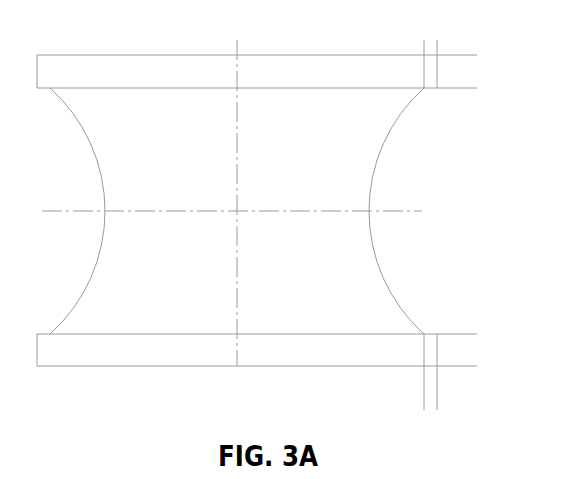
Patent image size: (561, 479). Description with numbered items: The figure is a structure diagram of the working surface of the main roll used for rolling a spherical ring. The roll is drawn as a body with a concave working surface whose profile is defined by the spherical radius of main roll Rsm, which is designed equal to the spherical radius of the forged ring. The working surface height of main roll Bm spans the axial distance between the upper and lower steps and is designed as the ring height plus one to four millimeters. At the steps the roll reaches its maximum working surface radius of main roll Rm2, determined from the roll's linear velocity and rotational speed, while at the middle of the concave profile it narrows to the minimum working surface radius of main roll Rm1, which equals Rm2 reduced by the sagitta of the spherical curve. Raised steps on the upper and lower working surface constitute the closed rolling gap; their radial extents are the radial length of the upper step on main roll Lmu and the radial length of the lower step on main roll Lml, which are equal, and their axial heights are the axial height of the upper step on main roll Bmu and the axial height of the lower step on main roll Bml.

The maximum working surface radius of main roll Rm2 is at (424, 44).
The radial length of the upper step on main roll Lmu is at (477, 44).
The axial height of the upper step on main roll Bmu is at (477, 88).
The spherical radius of main roll Rsm is at (380, 153).
The working surface height of main roll Bm is at (477, 334).
The minimum working surface radius of main roll Rm1 is at (368, 276).
The axial height of the lower step on main roll Bml is at (477, 393).
The radial length of the lower step on main roll Lml is at (467, 405).